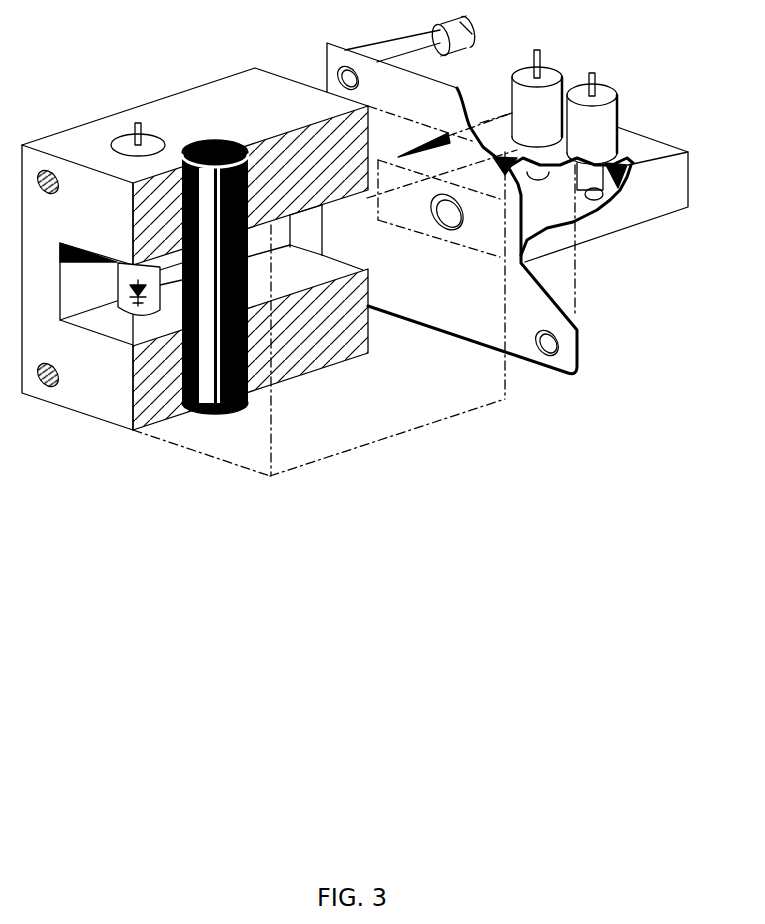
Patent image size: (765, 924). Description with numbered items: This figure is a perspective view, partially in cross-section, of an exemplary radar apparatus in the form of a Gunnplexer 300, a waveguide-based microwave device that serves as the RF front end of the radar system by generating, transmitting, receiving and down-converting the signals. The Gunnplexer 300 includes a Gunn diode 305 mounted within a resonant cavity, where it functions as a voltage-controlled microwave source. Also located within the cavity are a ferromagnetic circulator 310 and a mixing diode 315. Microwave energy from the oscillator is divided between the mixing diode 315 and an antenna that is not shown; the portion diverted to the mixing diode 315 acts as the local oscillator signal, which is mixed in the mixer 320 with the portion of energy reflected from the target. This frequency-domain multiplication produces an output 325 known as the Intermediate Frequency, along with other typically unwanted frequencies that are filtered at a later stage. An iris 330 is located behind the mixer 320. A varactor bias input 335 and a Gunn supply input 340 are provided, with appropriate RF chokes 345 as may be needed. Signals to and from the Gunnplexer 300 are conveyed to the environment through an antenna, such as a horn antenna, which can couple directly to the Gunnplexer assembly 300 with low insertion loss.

The Gunnplexer 300 is at (489, 611).
The Gunn diode 305 is at (593, 183).
The ferromagnetic circulator 310 is at (215, 140).
The mixing diode 315 is at (137, 313).
The mixer 320 is at (182, 447).
The output 325 is at (137, 117).
The iris 330 is at (437, 222).
The varactor bias input 335 is at (533, 57).
The Gunn supply input 340 is at (605, 73).
The RF chokes 345 is at (600, 128).